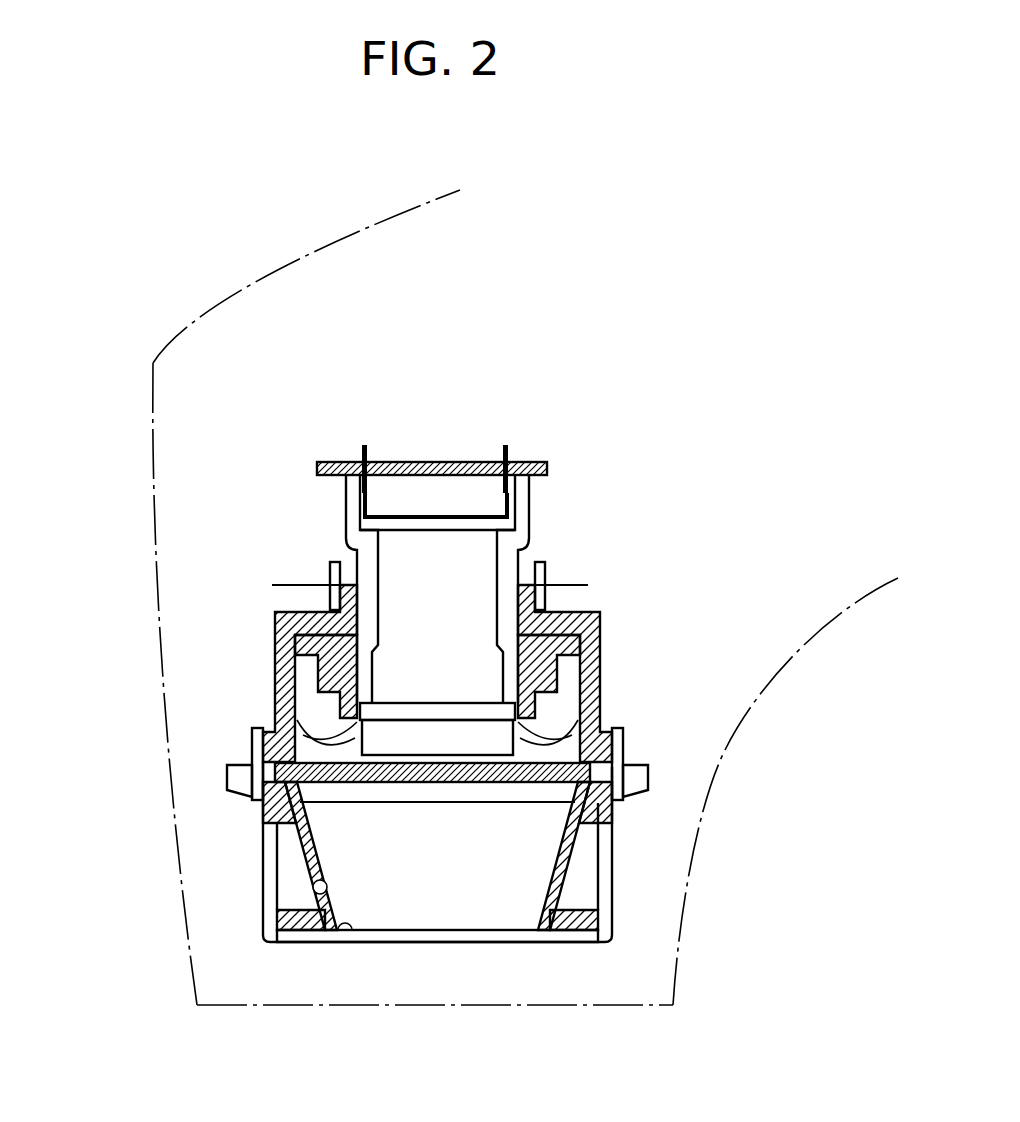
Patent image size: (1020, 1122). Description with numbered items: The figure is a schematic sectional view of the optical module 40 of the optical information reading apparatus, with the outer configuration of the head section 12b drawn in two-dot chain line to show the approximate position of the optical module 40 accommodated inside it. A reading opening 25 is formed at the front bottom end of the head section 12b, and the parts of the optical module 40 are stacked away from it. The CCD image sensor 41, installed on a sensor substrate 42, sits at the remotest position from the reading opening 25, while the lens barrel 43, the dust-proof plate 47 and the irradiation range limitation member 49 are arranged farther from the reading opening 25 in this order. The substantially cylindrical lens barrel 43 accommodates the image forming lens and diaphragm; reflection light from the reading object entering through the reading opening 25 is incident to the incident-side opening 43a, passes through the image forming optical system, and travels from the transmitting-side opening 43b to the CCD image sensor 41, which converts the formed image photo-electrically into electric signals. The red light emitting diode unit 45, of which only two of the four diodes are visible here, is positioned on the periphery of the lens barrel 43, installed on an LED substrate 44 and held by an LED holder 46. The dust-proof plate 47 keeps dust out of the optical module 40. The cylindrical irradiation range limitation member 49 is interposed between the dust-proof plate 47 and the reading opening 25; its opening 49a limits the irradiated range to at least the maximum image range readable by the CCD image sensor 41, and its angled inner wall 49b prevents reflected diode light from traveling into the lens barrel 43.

The head section 12b is at (150, 490).
The reading opening 25 is at (548, 1000).
The optical module 40 is at (603, 430).
The CCD image sensor 41 is at (355, 541).
The sensor substrate 42 is at (340, 462).
The lens barrel 43 is at (447, 577).
The incident-side opening 43a is at (470, 760).
The transmitting-side opening 43b is at (467, 528).
The LED substrate 44 is at (301, 584).
The red light emitting diode unit 45 is at (342, 746).
The LED holder 46 is at (602, 655).
The dust-proof plate 47 is at (350, 783).
The irradiation range limitation member 49 is at (290, 866).
The opening 49a is at (348, 932).
The inner wall 49b is at (292, 890).